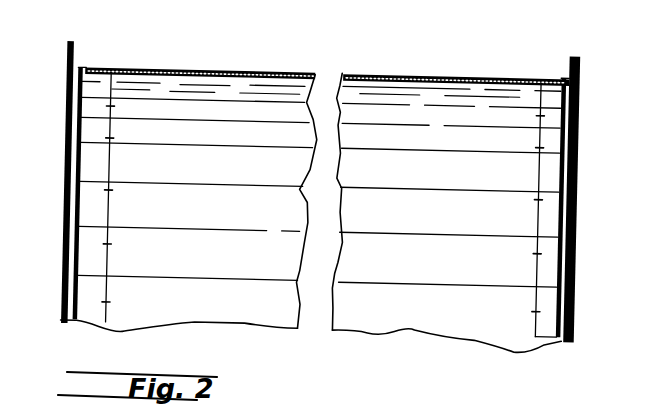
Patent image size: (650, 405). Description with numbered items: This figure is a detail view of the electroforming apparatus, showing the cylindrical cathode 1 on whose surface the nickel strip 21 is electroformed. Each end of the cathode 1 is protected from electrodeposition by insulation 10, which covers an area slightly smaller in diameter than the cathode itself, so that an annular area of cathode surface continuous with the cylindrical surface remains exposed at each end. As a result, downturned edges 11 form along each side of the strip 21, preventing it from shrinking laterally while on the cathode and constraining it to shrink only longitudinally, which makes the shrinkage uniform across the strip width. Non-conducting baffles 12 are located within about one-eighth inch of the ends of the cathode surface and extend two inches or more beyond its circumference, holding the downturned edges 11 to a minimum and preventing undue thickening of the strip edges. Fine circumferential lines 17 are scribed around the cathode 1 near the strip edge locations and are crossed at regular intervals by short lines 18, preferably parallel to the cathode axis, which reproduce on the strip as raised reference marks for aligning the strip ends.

The cathode 1 is at (273, 319).
The insulation 10 is at (83, 89).
The downturned edges 11 is at (79, 68).
The non-conducting baffles 12 is at (67, 45).
The circumferential lines 17 is at (117, 314).
The short lines 18 is at (115, 105).
The strip 21 is at (267, 67).